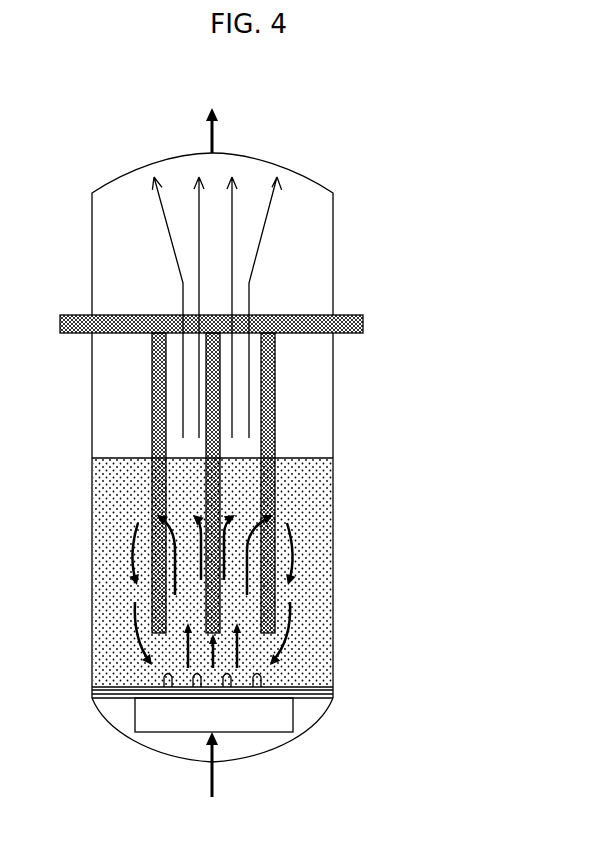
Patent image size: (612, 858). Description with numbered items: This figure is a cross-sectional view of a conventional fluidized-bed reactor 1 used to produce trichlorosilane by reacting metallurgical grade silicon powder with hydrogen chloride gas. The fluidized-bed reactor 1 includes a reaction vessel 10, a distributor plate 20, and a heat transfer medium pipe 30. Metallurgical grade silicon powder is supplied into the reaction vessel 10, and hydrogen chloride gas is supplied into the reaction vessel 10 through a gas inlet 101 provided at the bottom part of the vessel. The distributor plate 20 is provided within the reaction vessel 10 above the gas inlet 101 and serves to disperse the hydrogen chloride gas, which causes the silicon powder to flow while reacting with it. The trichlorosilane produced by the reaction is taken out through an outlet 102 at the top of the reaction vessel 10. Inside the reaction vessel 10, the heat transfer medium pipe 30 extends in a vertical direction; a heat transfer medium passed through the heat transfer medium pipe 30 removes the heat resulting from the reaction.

The fluidized-bed reactor 1 is at (393, 120).
The reaction vessel 10 is at (333, 262).
The distributor plate 20 is at (280, 685).
The heat transfer medium pipe 30 is at (275, 423).
The gas inlet 101 is at (213, 767).
The outlet 102 is at (217, 142).